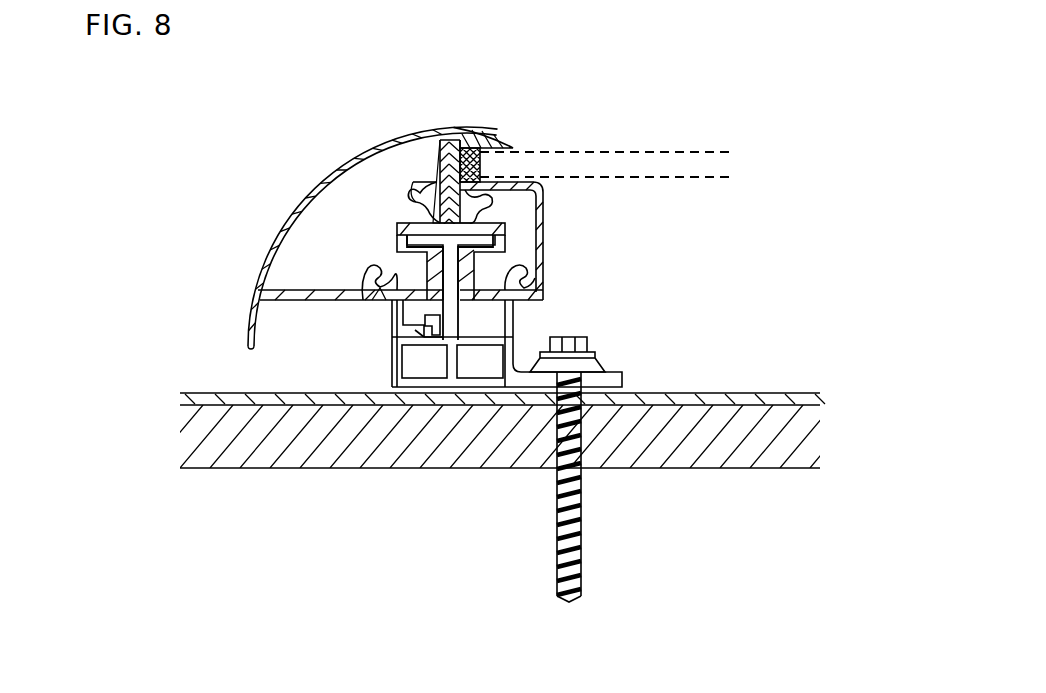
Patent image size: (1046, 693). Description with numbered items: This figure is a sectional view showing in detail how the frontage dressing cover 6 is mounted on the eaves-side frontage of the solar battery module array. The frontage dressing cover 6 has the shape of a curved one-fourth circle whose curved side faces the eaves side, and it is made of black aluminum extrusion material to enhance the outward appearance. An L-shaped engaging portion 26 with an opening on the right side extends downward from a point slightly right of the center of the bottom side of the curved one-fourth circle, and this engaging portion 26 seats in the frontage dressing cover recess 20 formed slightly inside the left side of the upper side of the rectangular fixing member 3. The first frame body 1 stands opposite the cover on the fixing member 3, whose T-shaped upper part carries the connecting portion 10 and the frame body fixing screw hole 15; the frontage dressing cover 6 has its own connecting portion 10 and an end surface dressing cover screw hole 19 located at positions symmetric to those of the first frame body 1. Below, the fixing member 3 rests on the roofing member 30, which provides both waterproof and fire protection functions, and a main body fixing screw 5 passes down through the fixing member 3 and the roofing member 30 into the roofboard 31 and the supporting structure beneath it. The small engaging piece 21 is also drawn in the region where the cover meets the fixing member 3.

The first frame body 1 is at (480, 135).
The fixing member 3 is at (513, 352).
The main body fixing screw 5 is at (570, 520).
The frontage dressing cover 6 is at (293, 207).
The connecting portion 10 is at (403, 238).
The frame body fixing screw hole 15 is at (483, 193).
The end surface dressing cover screw hole 19 is at (417, 190).
The frontage dressing cover recess 20 is at (397, 350).
The engaging piece 21 is at (427, 320).
The L-shaped engaging portion 26 is at (433, 325).
The roofing member 30 is at (697, 397).
The roofboard 31 is at (292, 442).